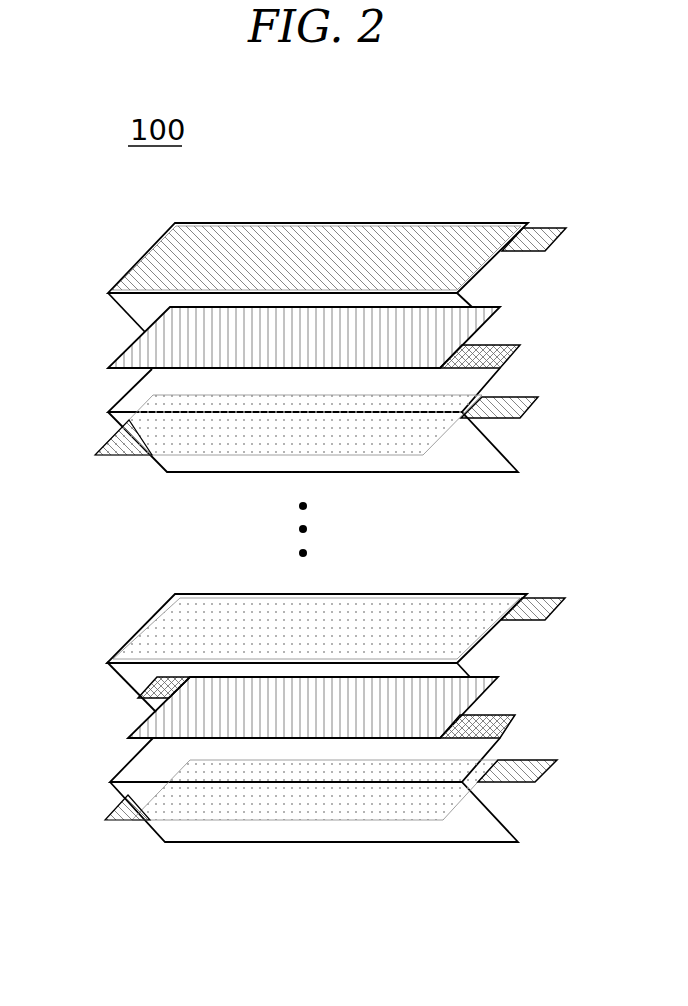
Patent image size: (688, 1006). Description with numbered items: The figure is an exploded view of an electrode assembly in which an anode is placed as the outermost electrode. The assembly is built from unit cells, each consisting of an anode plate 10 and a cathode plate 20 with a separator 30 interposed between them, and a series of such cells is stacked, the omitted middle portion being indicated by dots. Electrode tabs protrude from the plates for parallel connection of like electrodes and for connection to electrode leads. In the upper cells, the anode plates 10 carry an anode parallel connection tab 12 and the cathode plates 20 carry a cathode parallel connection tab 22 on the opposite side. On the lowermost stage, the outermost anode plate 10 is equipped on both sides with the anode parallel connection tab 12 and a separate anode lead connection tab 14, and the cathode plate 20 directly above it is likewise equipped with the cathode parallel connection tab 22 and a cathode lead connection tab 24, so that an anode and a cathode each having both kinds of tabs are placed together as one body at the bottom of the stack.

The anode plate 10 is at (157, 266).
The anode parallel connection tab 12 is at (543, 233).
The anode lead connection tab 14 is at (137, 818).
The cathode plate 20 is at (150, 346).
The cathode parallel connection tab 22 is at (517, 347).
The cathode lead connection tab 24 is at (152, 688).
The separator 30 is at (133, 308).